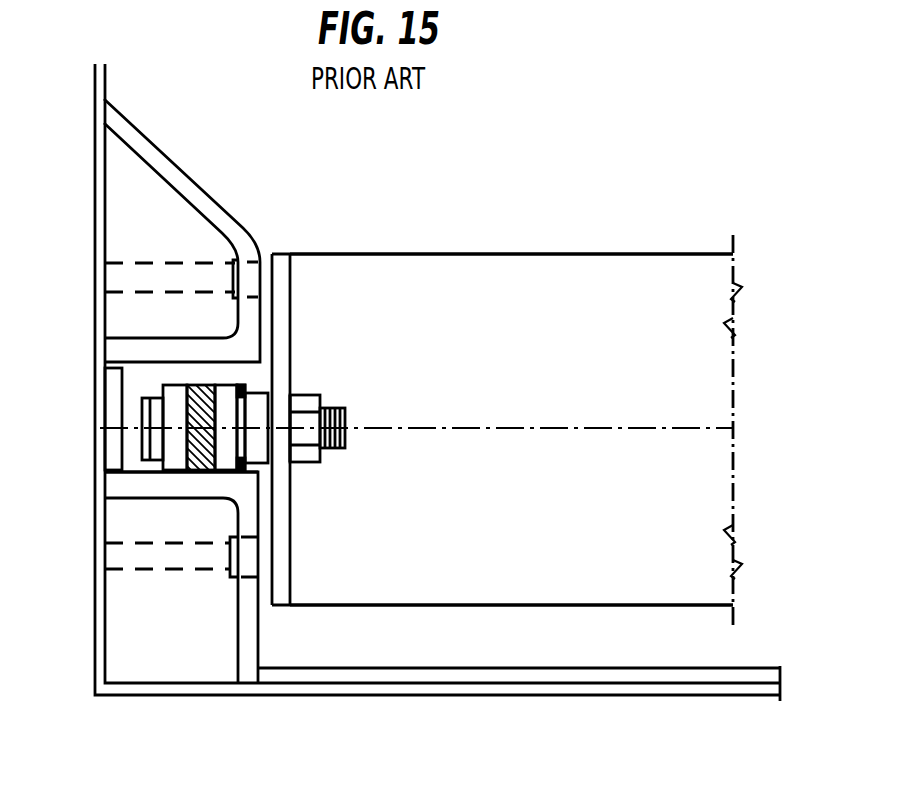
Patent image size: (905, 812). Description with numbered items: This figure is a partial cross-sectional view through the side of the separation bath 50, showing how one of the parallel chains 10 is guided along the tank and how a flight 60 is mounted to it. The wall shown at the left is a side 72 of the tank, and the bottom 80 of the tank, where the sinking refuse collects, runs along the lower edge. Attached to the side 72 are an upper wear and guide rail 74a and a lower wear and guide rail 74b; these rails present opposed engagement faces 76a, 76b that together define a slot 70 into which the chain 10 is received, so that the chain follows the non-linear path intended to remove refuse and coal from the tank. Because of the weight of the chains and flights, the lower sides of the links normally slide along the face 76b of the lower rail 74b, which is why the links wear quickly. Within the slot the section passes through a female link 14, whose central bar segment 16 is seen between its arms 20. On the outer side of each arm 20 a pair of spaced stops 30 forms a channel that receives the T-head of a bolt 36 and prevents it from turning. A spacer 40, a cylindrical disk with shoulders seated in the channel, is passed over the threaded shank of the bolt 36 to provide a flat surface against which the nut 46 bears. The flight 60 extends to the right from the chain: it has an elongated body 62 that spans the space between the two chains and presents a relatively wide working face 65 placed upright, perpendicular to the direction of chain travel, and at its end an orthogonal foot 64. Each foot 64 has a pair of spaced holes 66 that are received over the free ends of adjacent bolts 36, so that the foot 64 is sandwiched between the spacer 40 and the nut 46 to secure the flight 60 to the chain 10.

The chain 10 is at (128, 442).
The female link 14 is at (222, 484).
The central bar segment 16 is at (215, 399).
The arm 20 is at (174, 400).
The stop 30 is at (157, 408).
The bolt 36 is at (346, 406).
The spacer 40 is at (262, 450).
The nut 46 is at (312, 395).
The bath 50 is at (643, 150).
The flight 60 is at (565, 272).
The elongated body 62 is at (648, 243).
The foot 64 is at (283, 300).
The working face 65 is at (478, 275).
The hole 66 is at (268, 333).
The slot 70 is at (178, 392).
The side of tank 72 is at (96, 607).
The upper wear and guide rail 74a is at (197, 181).
The lower wear and guide rail 74b is at (237, 640).
The upper engagement face 76a is at (199, 370).
The lower engagement face 76b is at (130, 474).
The bottom of tank 80 is at (604, 669).